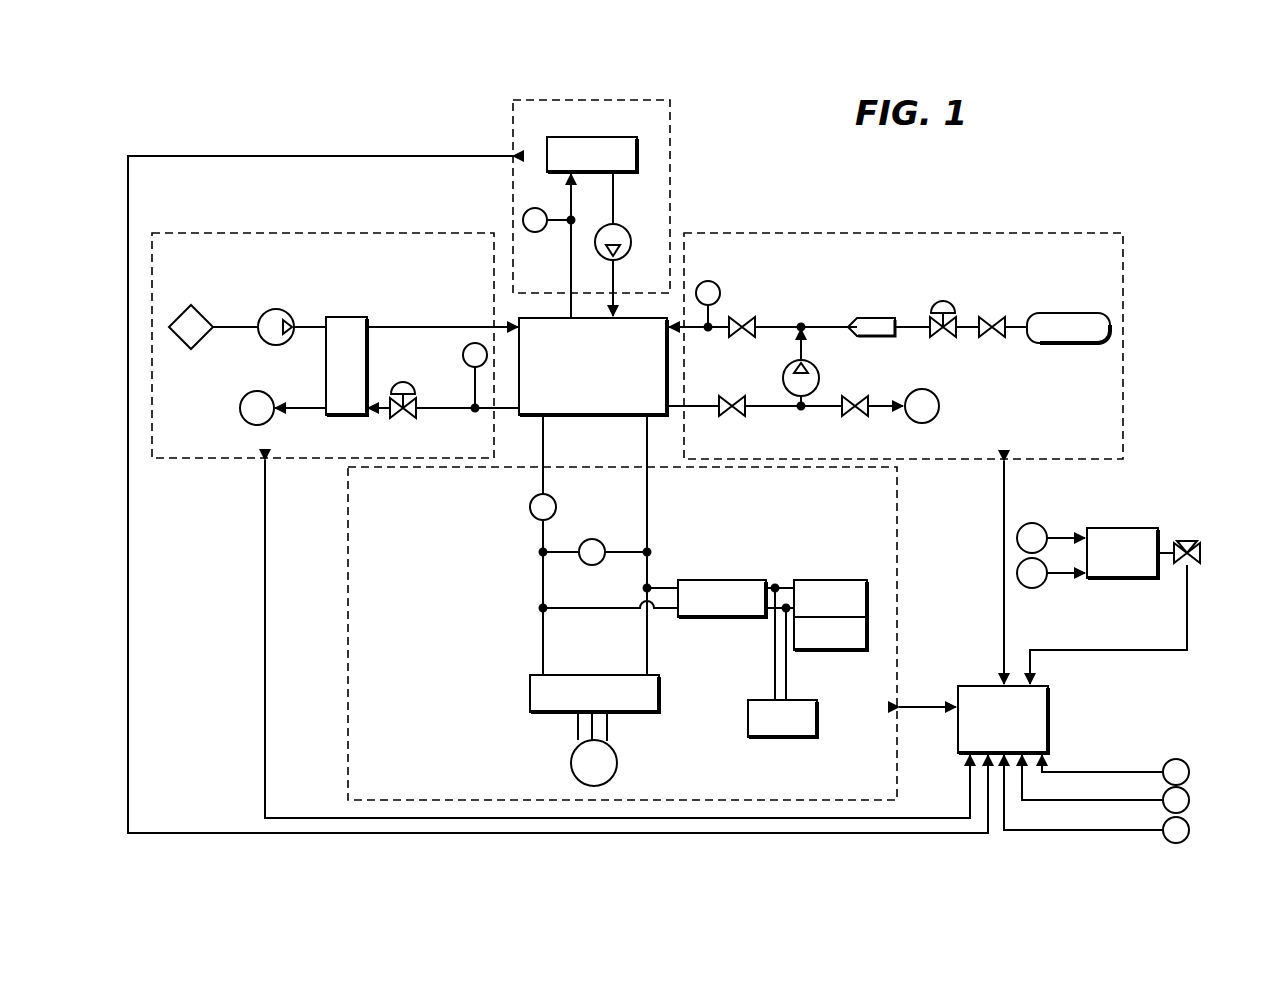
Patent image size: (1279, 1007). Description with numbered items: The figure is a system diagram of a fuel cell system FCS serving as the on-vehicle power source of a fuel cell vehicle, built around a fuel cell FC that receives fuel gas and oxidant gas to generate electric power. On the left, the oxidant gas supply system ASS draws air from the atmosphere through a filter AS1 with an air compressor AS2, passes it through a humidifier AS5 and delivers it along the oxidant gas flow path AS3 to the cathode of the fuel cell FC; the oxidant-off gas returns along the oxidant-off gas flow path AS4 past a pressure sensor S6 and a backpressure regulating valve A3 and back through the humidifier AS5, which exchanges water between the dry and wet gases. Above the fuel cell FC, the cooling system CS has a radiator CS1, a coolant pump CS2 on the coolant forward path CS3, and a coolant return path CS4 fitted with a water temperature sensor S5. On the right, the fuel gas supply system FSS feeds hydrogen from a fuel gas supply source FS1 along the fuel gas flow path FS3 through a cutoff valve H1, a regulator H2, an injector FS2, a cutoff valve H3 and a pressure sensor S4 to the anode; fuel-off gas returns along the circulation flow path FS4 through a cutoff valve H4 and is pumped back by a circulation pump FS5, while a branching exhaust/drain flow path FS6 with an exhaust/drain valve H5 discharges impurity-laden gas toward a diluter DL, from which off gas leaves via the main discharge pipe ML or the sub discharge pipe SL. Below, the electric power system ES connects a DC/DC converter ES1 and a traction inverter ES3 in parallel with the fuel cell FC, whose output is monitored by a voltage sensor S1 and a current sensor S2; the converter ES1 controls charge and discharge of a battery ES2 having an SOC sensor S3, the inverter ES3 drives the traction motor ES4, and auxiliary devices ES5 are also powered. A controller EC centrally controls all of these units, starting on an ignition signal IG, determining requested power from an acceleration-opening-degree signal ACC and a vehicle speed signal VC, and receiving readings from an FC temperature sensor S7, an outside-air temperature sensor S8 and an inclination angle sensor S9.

The fuel cell system FCS is at (1152, 187).
The oxidant gas supply system ASS is at (305, 233).
The filter AS1 is at (203, 308).
The air compressor AS2 is at (276, 308).
The oxidant gas flow path AS3 is at (390, 326).
The oxidant-off gas flow path AS4 is at (432, 410).
The humidifier AS5 is at (345, 316).
The backpressure regulating valve A3 is at (403, 382).
The pressure sensor S6 is at (465, 362).
The cooling system CS is at (670, 137).
The radiator CS1 is at (585, 137).
The coolant pump CS2 is at (631, 240).
The coolant forward path CS3 is at (613, 197).
The coolant return path CS4 is at (571, 288).
The water temperature sensor S5 is at (525, 210).
The fuel cell FC is at (582, 416).
The fuel gas supply system FSS is at (1123, 292).
The fuel gas supply source FS1 is at (1075, 312).
The injector FS2 is at (878, 317).
The fuel gas flow path FS3 is at (778, 324).
The circulation flow path FS4 is at (768, 408).
The circulation pump FS5 is at (819, 382).
The exhaust/drain flow path FS6 is at (880, 404).
The cutoff valve H1 is at (997, 316).
The regulator H2 is at (945, 302).
The cutoff valve H3 is at (745, 316).
The cutoff valve H4 is at (735, 417).
The exhaust/drain valve H5 is at (857, 417).
The pressure sensor S4 is at (708, 281).
The electric power system ES is at (897, 572).
The DC/DC converter ES1 is at (718, 579).
The battery ES2 is at (832, 579).
The traction inverter ES3 is at (660, 702).
The traction motor ES4 is at (618, 766).
The auxiliary devices ES5 is at (782, 738).
The voltage sensor S1 is at (595, 538).
The current sensor S2 is at (530, 512).
The SOC sensor S3 is at (828, 652).
The controller EC is at (966, 685).
The diluter DL is at (1125, 527).
The sub discharge pipe SL is at (1187, 541).
The main discharge pipe ML is at (1200, 553).
The ignition signal IG is at (1050, 698).
The vehicle speed signal VC is at (1050, 719).
The acceleration-opening-degree signal ACC is at (1050, 741).
The FC temperature sensor S7 is at (1189, 765).
The outside-air temperature sensor S8 is at (1189, 793).
The inclination angle sensor S9 is at (1189, 825).